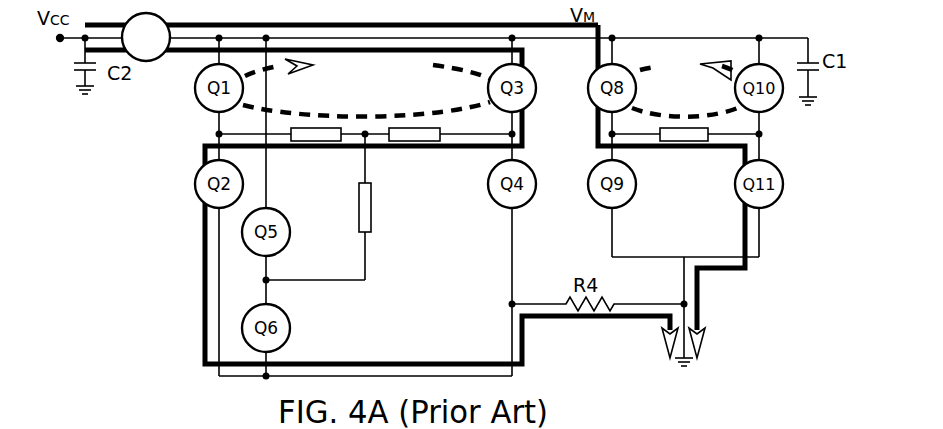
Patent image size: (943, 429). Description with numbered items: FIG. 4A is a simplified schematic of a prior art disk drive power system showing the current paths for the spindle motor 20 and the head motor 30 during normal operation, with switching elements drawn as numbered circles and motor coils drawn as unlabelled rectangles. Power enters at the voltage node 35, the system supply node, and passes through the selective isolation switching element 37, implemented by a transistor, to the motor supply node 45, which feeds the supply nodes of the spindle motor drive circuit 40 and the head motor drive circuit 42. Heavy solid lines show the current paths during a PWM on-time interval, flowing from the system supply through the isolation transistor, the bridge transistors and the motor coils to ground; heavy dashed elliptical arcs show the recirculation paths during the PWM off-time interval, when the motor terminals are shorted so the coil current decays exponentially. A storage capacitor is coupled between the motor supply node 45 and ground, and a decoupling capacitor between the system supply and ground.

The spindle motor 20 is at (392, 170).
The head motor 30 is at (676, 141).
The voltage node 35 is at (52, 39).
The selective isolation switching element 37 is at (140, 61).
The spindle motor drive circuit 40 is at (182, 306).
The head motor drive circuit 42 is at (775, 260).
The motor supply node 45 is at (514, 24).